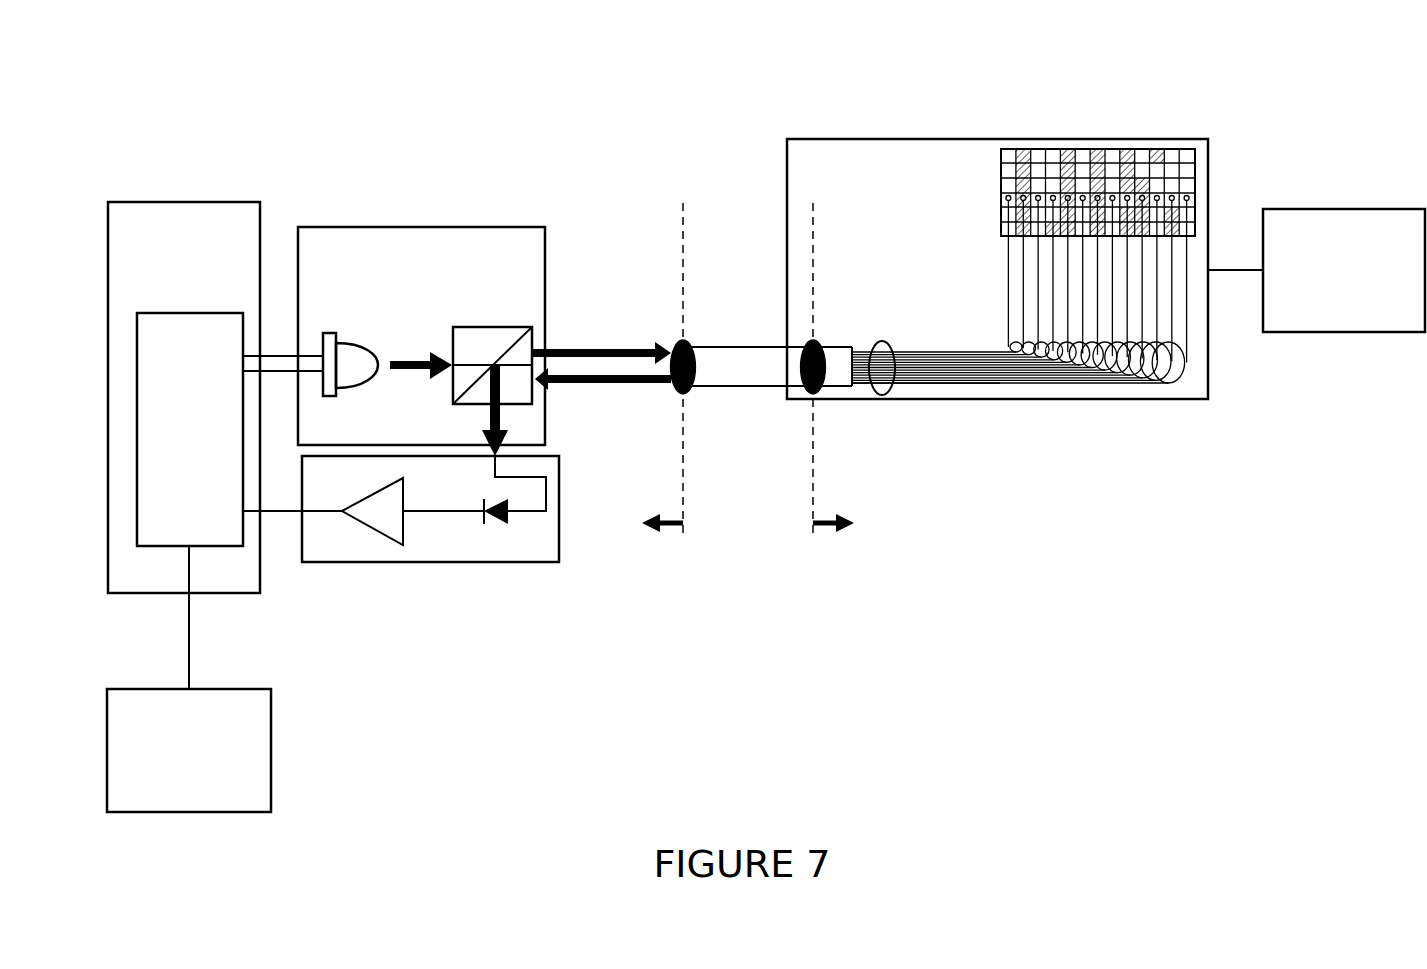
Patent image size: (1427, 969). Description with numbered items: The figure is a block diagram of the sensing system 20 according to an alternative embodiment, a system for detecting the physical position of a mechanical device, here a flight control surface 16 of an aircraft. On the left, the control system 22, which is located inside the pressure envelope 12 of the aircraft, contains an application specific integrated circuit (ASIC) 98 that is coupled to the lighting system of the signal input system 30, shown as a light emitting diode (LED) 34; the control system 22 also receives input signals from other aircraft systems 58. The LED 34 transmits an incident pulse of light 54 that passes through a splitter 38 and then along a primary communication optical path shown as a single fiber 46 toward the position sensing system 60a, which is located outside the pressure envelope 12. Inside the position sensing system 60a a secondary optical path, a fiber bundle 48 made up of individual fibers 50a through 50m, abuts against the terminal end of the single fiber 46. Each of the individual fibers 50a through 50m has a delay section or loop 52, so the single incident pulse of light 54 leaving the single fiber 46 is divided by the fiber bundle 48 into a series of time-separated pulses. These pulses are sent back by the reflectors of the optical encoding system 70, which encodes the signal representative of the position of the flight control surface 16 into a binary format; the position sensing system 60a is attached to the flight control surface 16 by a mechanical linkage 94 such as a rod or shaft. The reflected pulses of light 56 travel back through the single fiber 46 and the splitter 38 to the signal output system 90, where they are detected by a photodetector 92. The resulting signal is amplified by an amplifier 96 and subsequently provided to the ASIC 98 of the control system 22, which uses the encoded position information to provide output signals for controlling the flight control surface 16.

The pressure envelope 12 is at (574, 158).
The flight control surface 16 is at (1375, 209).
The sensing system 20 is at (1251, 67).
The control system 22 is at (228, 202).
The signal input system 30 is at (482, 227).
The light emitting diode 34 is at (343, 342).
The splitter 38 is at (490, 327).
The single fiber 46 is at (747, 347).
The fiber bundle 48 is at (897, 403).
The individual fiber 50a is at (900, 352).
The individual fiber 50m is at (970, 383).
The delay loop 52 is at (1188, 380).
The incident pulse of light 54 is at (402, 361).
The reflected pulse of light 56 is at (500, 418).
The other aircraft systems 58 is at (271, 751).
The position sensing system 60a is at (965, 139).
The optical encoding system 70 is at (1200, 185).
The signal output system 90 is at (445, 512).
The photodetector 92 is at (500, 525).
The mechanical linkage 94 is at (1235, 274).
The amplifier 96 is at (380, 532).
The application specific integrated circuit 98 is at (218, 546).